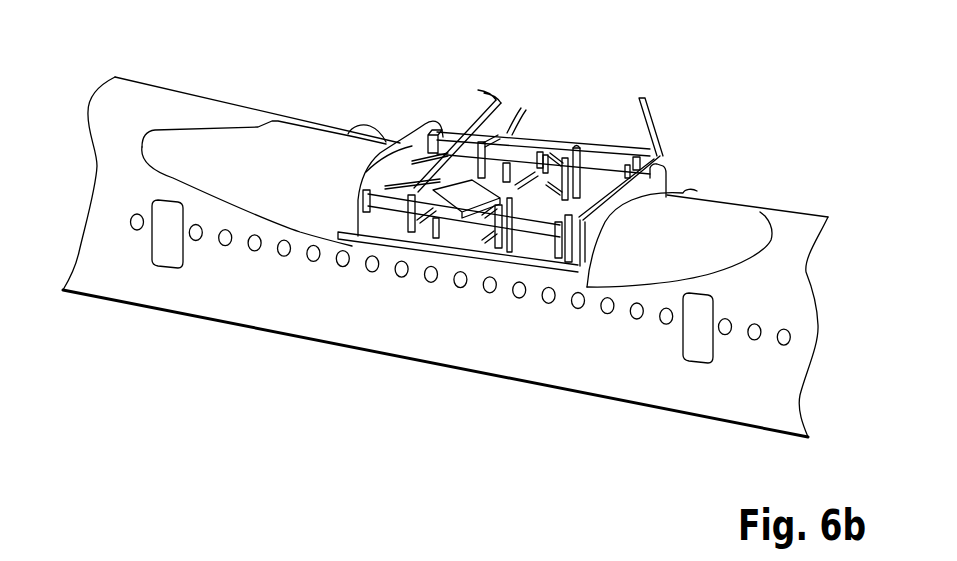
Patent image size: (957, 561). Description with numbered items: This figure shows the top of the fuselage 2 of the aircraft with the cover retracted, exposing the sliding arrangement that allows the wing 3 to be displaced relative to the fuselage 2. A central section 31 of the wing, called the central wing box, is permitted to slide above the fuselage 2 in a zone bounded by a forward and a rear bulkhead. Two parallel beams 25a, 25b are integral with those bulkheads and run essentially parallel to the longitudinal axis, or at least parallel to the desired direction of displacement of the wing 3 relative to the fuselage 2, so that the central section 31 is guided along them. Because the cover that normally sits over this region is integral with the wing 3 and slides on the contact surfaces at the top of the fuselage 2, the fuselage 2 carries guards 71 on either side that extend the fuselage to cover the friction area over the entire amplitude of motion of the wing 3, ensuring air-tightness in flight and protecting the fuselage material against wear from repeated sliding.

The fuselage 2 is at (273, 312).
The wing 3 is at (658, 110).
The beam 25a is at (510, 168).
The beam 25b is at (398, 208).
The central section of the wing 31 is at (469, 180).
The guard 71 is at (238, 160).